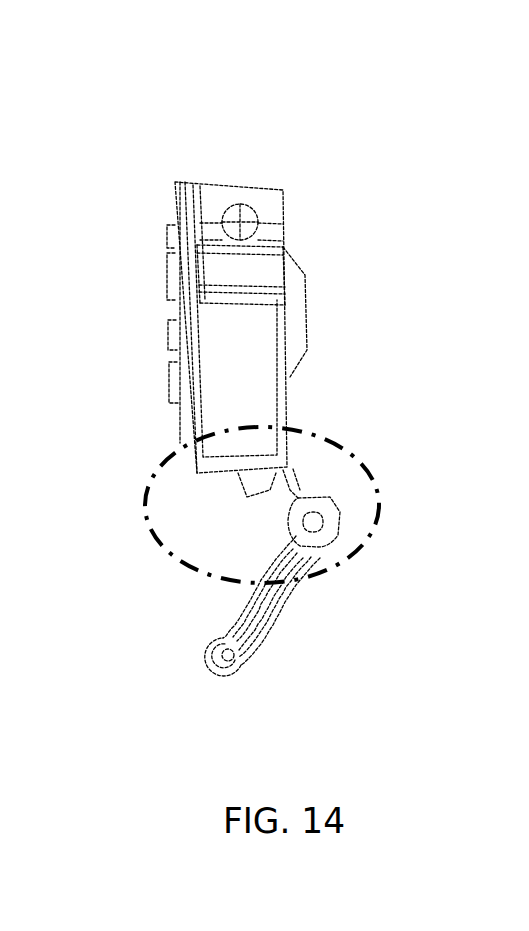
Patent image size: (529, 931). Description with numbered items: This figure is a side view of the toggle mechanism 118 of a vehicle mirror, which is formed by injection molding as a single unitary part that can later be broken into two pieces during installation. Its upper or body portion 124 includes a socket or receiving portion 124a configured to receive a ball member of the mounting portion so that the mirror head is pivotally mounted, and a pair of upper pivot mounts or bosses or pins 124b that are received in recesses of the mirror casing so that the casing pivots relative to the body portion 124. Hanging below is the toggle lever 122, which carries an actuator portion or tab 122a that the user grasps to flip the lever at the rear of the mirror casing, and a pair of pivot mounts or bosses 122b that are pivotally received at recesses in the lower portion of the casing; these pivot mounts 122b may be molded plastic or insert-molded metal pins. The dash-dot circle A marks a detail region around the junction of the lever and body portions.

The toggle mechanism 118 is at (175, 160).
The body portion 124 is at (236, 192).
The socket or receiving portion 124a is at (173, 280).
The upper pivot mounts or bosses or pins 124b is at (252, 220).
The toggle lever 122 is at (208, 675).
The actuator portion or tab 122a is at (233, 657).
The pivot mounts or bosses 122b is at (316, 522).
The detail region A is at (343, 554).